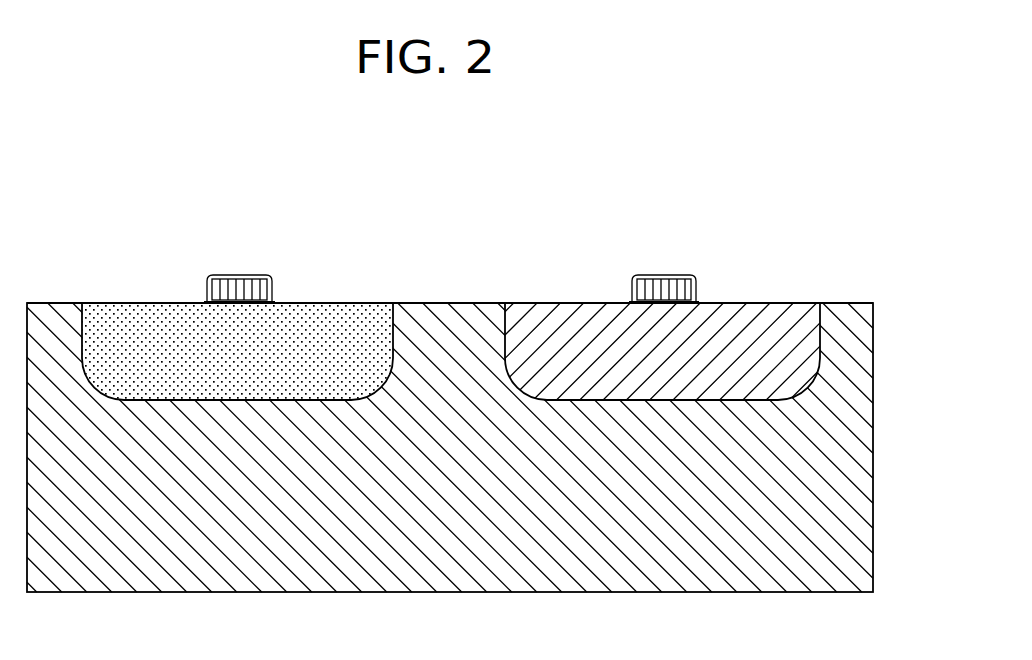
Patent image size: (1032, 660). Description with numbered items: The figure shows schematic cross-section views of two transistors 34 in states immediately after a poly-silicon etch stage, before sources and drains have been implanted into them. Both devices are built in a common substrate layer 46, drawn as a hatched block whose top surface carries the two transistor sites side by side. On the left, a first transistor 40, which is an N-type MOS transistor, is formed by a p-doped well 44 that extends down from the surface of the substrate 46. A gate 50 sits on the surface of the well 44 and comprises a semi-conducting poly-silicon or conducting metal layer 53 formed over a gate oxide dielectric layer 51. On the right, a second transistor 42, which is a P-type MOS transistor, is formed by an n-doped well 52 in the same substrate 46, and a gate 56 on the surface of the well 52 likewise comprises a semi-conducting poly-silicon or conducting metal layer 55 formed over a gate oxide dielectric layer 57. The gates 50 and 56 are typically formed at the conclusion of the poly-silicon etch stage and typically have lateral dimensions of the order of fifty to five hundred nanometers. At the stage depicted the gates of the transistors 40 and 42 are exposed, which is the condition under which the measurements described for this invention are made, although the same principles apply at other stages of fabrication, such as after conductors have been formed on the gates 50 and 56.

The transistors 34 is at (507, 230).
The first transistor 40 is at (219, 249).
The second transistor 42 is at (648, 249).
The p-doped well 44 is at (97, 312).
The substrate layer 46 is at (862, 343).
The gate 50 is at (218, 260).
The gate oxide dielectric layer 51 is at (197, 305).
The n-doped well 52 is at (527, 311).
The semi-conducting poly-silicon or conducting metal layer 53 is at (272, 285).
The semi-conducting poly-silicon or conducting metal layer 55 is at (696, 285).
The gate 56 is at (625, 267).
The gate oxide dielectric layer 57 is at (629, 305).